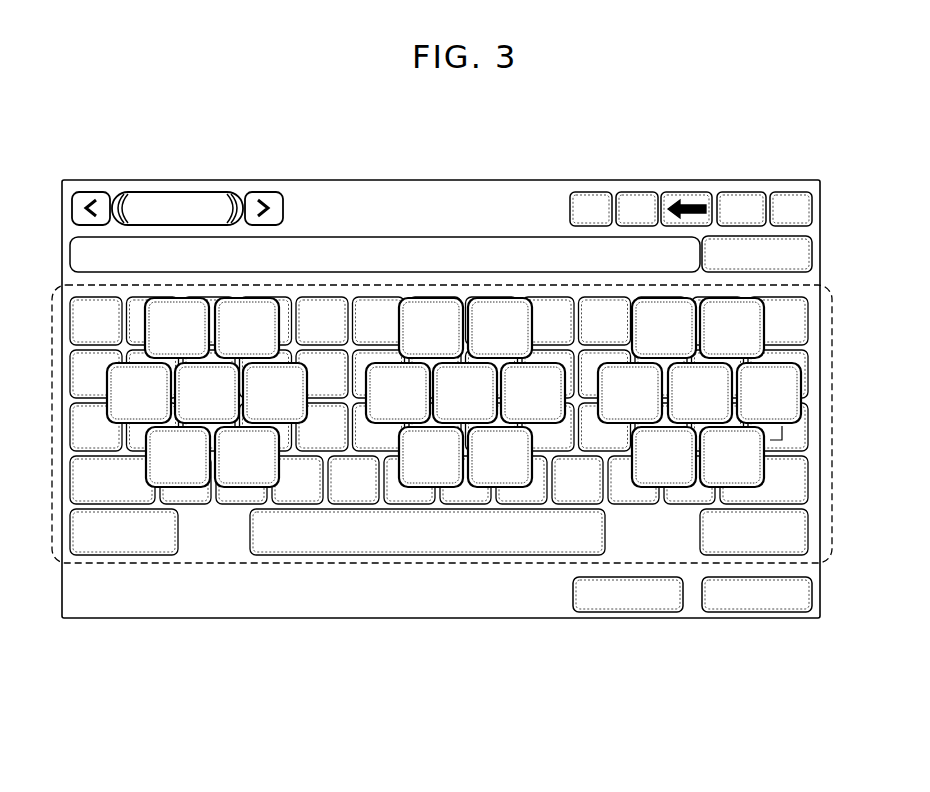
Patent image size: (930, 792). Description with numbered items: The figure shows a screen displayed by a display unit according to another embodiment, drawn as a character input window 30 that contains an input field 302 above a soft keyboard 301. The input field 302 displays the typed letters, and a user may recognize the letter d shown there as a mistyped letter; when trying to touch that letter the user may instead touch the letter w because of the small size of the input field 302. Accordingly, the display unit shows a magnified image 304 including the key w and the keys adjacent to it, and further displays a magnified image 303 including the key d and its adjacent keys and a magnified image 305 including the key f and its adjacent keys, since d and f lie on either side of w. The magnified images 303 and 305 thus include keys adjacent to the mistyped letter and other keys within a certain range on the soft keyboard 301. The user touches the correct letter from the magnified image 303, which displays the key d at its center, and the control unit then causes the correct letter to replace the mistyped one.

The character input window 30 is at (80, 180).
The soft keyboard 301 is at (462, 456).
The input field 302 is at (512, 250).
The magnified image 303 is at (197, 472).
The magnified image 304 is at (450, 470).
The magnified image 305 is at (683, 465).